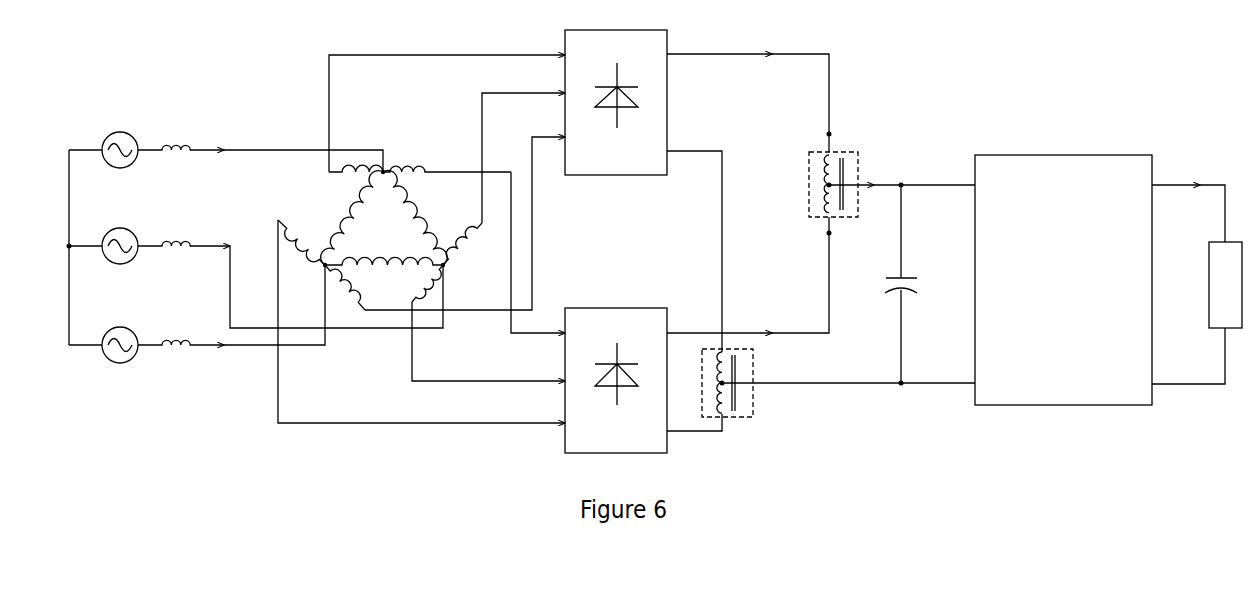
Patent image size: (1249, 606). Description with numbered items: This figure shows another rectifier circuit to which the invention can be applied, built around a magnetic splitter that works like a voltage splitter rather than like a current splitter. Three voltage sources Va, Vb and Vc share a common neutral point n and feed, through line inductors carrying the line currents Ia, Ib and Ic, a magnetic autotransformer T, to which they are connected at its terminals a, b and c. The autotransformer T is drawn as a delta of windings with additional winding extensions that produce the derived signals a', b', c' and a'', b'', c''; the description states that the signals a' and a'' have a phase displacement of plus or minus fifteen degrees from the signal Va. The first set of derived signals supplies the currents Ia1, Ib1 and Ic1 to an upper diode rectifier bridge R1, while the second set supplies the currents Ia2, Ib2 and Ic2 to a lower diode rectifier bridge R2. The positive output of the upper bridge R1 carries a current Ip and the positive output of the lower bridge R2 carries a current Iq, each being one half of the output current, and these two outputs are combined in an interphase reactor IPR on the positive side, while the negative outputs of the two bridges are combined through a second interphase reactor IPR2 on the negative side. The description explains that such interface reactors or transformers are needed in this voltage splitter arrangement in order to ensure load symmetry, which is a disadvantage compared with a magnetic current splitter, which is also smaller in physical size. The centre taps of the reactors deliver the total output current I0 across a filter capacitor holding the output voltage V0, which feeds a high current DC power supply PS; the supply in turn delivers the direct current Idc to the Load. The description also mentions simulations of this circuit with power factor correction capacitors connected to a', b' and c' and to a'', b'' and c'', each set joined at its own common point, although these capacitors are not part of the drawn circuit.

The neutral node n is at (57, 247).
The voltage source Va is at (103, 136).
The voltage source Vb is at (103, 233).
The voltage source Vc is at (103, 332).
The phase a line current / inductor Ia is at (260, 145).
The phase b line current / inductor Ib is at (290, 273).
The phase c line current / inductor Ic is at (231, 305).
The magnetic autotransformer T is at (389, 223).
The current Ia' to upper rectifier Ia1 is at (447, 100).
The current Ib' to upper rectifier Ib1 is at (523, 145).
The current Ic' to upper rectifier Ic1 is at (465, 211).
The current Ia'' to lower rectifier Ia2 is at (538, 253).
The current Ib'' to lower rectifier Ib2 is at (488, 341).
The current Ic'' to lower rectifier Ic2 is at (421, 321).
The upper diode rectifier bridge R1 is at (629, 102).
The lower diode rectifier bridge R2 is at (629, 380).
The upper rectifier output current Ip = I0/2 Ip is at (748, 82).
The lower rectifier output current Iq = I0/2 Iq is at (748, 275).
The interface reactor IPR is at (847, 150).
The interface reactor IPR2 is at (801, 383).
The output current I0 is at (902, 171).
The output filter capacitor / voltage V0 is at (918, 284).
The high current DC power supply PS is at (1063, 280).
The DC load current Idc is at (1188, 269).
The load Load is at (1225, 285).